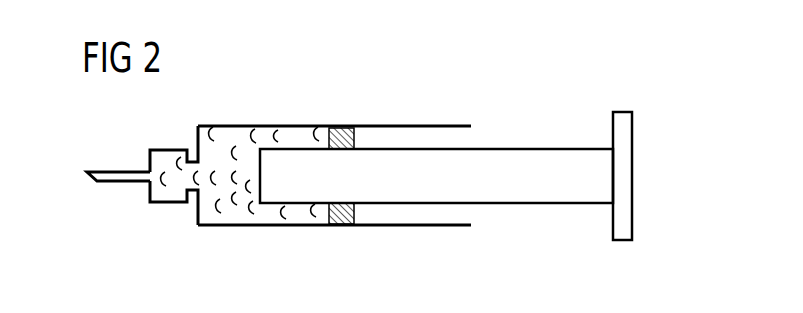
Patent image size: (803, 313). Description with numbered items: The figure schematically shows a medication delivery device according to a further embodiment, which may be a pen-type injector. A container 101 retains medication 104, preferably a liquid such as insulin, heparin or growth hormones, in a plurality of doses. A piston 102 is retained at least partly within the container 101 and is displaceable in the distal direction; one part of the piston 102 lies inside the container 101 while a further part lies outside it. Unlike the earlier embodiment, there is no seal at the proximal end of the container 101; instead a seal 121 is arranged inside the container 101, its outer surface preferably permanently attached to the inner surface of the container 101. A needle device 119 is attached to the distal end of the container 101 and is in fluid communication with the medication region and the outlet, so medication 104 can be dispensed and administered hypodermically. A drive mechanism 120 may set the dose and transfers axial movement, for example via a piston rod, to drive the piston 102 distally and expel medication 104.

The container 101 is at (308, 227).
The piston 102 is at (560, 158).
The medication 104 is at (248, 225).
The needle device 119 is at (112, 183).
The drive mechanism 120 is at (623, 170).
The seal 121 is at (340, 125).